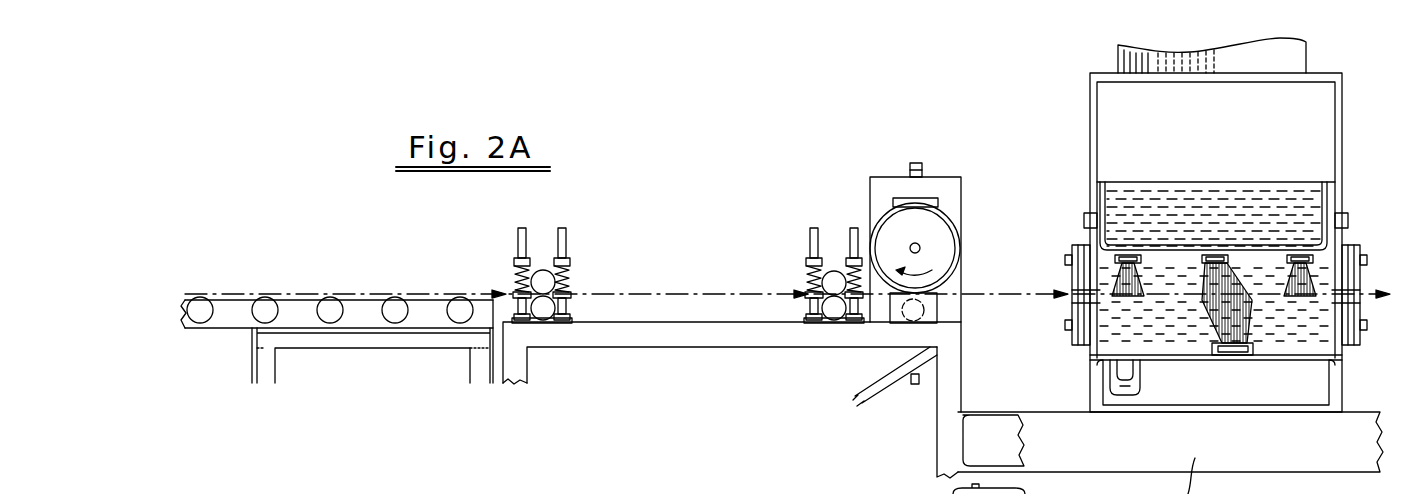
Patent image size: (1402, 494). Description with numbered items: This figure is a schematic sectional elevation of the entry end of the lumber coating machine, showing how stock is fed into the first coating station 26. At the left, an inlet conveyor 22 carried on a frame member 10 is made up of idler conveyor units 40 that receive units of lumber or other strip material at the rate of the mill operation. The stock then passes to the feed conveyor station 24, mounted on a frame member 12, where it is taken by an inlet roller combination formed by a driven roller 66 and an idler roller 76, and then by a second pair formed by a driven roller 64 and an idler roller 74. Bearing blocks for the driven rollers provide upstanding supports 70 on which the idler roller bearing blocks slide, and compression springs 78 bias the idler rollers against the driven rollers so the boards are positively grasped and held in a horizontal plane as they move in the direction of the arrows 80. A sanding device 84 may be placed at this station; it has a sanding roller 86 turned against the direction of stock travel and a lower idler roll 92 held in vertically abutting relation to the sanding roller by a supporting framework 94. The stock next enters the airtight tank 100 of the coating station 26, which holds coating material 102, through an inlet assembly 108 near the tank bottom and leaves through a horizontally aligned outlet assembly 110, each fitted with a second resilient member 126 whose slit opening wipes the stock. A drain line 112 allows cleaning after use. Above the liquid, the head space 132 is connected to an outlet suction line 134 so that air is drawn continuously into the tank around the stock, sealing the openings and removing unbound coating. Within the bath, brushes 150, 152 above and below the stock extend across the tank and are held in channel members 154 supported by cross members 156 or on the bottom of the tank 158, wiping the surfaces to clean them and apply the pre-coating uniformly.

The frame member 10 is at (388, 345).
The frame member 12 is at (740, 347).
The inlet conveyor 22 is at (266, 275).
The feed conveyor station 24 is at (834, 263).
The first coating station 26 is at (1054, 126).
The idler conveyor units 40 is at (395, 303).
The driven roller 64 is at (833, 321).
The driven roller 66 is at (545, 321).
The upstanding supports 70 is at (566, 246).
The idler roller 74 is at (833, 271).
The idler roller 76 is at (537, 268).
The compression springs 78 is at (520, 250).
The arrows 80 is at (730, 293).
The sanding device 84 is at (939, 238).
The sanding roller 86 is at (948, 213).
The lower idler roll 92 is at (913, 324).
The supporting framework 94 is at (892, 191).
The airtight tank 100 is at (1348, 92).
The coating material 102 is at (1237, 186).
The inlet assembly 108 is at (1062, 316).
The outlet assembly 110 is at (1355, 348).
The drain line 112 is at (1123, 390).
The second resilient member 126 is at (1070, 296).
The head space 132 is at (1155, 127).
The outlet suction line 134 is at (1126, 58).
The brush 150 is at (1200, 288).
The brush 152 is at (1258, 342).
The channel members 154 is at (1136, 255).
The cross members 156 is at (1273, 201).
The bottom of the tank 158 is at (1221, 358).